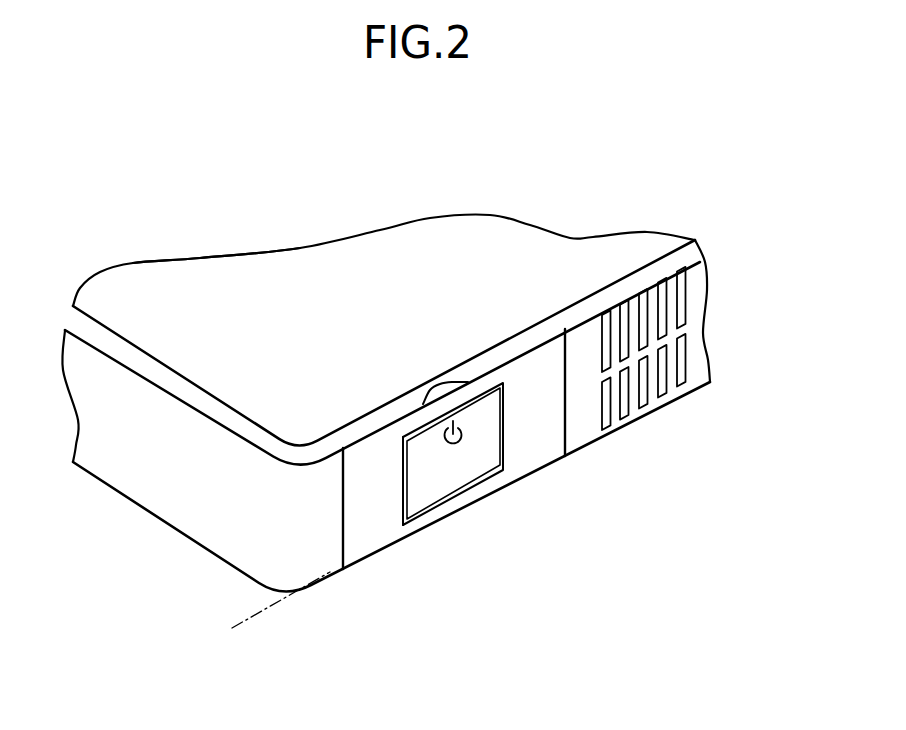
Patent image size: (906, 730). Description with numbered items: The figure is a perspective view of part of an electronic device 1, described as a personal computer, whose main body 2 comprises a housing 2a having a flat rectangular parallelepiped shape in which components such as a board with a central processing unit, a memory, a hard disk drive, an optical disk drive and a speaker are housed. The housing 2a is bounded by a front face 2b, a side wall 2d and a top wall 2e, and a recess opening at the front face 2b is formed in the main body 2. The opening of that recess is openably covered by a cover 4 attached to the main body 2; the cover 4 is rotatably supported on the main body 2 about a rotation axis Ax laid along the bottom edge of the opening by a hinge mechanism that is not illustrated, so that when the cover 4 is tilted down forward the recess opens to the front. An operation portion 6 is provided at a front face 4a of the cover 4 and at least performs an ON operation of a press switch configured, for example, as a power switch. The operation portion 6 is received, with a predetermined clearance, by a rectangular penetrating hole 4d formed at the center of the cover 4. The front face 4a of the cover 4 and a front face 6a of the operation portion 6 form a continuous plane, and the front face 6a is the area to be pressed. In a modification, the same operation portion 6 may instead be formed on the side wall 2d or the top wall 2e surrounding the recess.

The electronic device 1 is at (530, 172).
The main body 2 is at (391, 385).
The housing 2a is at (605, 257).
The front face 2b is at (697, 360).
The side wall 2d is at (130, 472).
The top wall 2e is at (200, 272).
The cover 4 is at (567, 427).
The front face 4a is at (532, 450).
The rectangular penetrating hole 4d is at (403, 479).
The operation portion 6 is at (473, 463).
The front face 6a is at (438, 458).
The rotation axis Ax is at (263, 614).